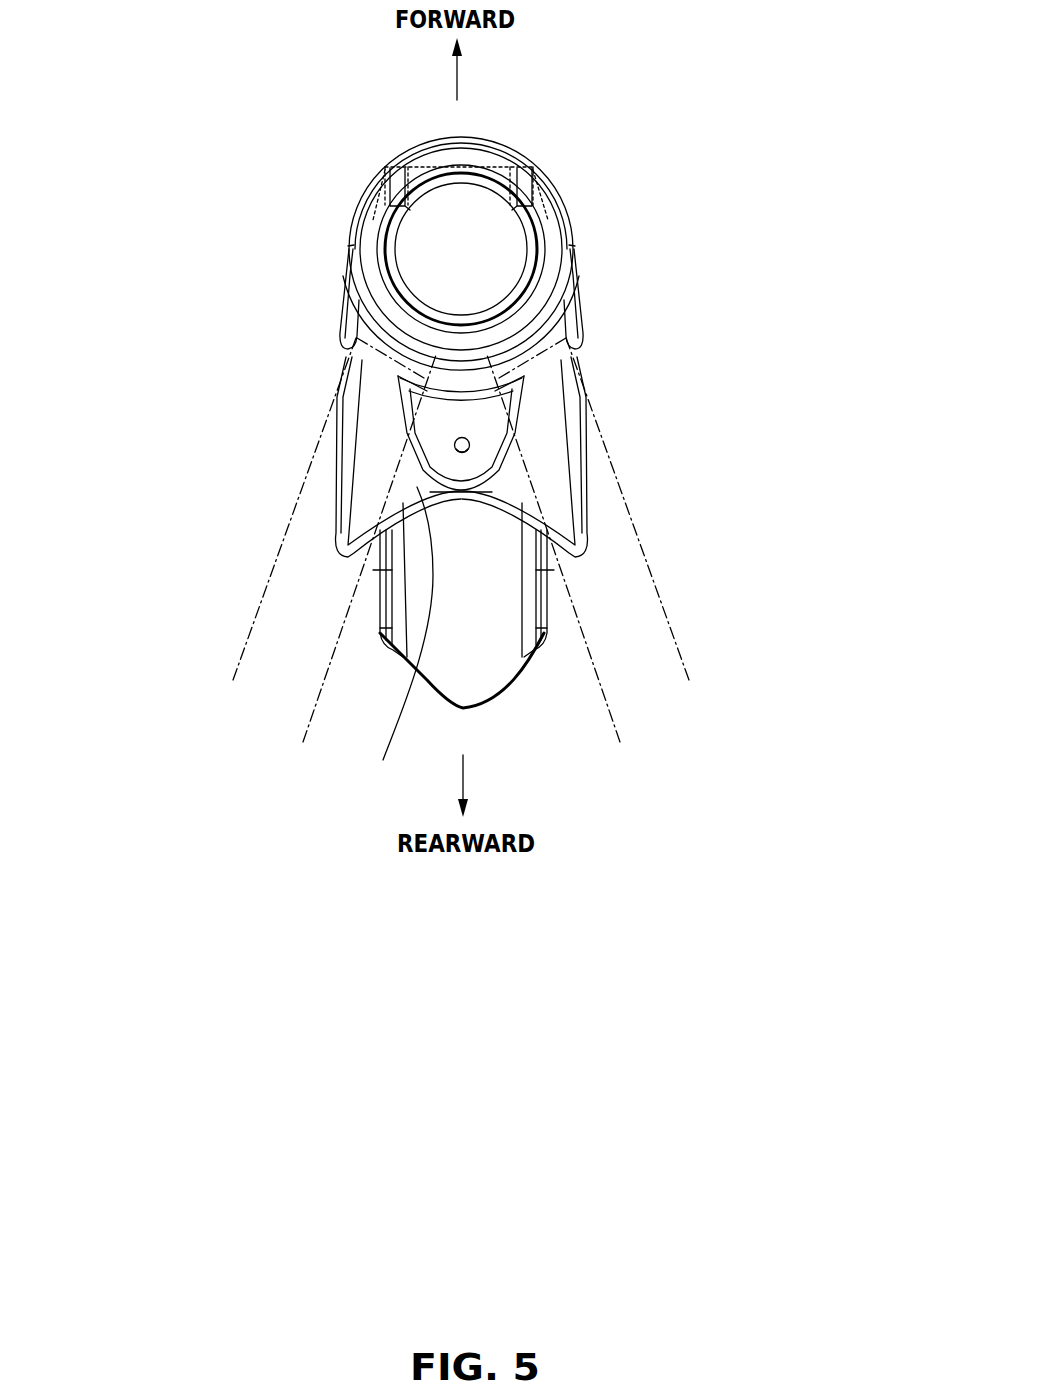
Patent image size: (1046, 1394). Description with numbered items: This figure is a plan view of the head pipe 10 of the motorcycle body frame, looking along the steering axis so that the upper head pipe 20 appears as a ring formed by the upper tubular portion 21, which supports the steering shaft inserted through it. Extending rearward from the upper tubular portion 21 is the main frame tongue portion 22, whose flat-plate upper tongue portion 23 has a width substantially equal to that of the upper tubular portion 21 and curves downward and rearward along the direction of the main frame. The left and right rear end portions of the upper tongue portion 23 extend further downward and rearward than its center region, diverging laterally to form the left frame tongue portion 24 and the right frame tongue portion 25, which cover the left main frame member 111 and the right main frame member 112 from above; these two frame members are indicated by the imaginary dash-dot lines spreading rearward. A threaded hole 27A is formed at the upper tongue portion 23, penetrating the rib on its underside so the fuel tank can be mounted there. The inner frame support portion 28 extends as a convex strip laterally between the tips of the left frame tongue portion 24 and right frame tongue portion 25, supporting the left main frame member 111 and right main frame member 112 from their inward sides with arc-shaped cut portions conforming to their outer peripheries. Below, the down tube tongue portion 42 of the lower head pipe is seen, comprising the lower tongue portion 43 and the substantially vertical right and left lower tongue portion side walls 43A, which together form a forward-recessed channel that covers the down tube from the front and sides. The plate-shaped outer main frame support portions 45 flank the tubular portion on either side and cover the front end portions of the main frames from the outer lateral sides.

The head pipe 10 is at (314, 124).
The upper head pipe 20 is at (546, 178).
The upper tubular portion 21 is at (503, 148).
The main frame tongue portion 22 is at (546, 403).
The upper tongue portion 23 is at (399, 641).
The left frame tongue portion 24 is at (362, 475).
The right frame tongue portion 25 is at (545, 478).
The threaded hole 27A is at (454, 441).
The inner frame support portion 28 is at (467, 500).
The down tube tongue portion 42 is at (536, 674).
The lower tongue portion 43 is at (483, 666).
The lower tongue portion side walls 43A is at (372, 548).
The outer main frame support portions 45 is at (341, 325).
The left main frame member 111 is at (265, 597).
The right main frame member 112 is at (657, 597).